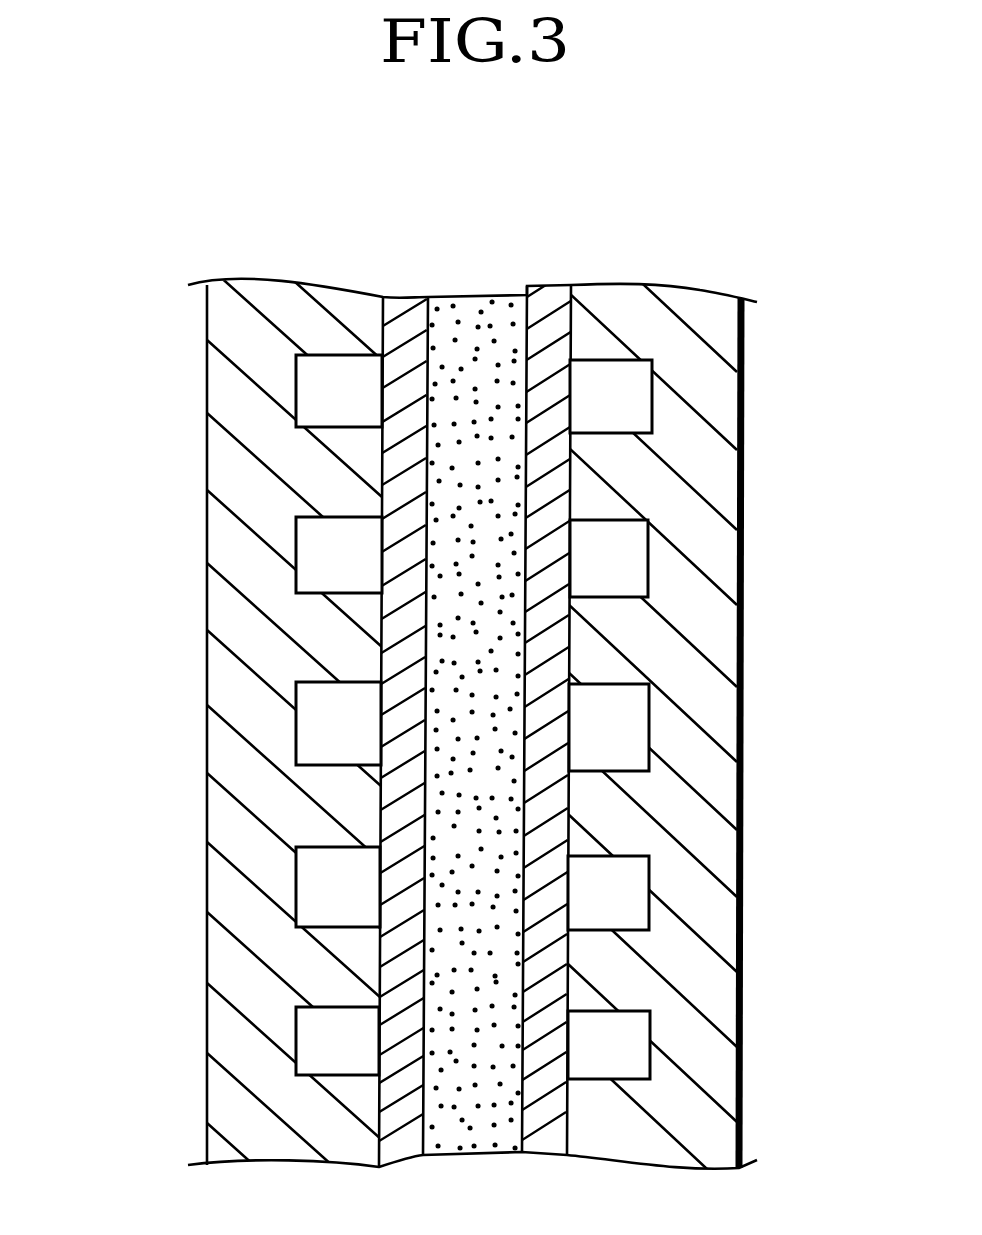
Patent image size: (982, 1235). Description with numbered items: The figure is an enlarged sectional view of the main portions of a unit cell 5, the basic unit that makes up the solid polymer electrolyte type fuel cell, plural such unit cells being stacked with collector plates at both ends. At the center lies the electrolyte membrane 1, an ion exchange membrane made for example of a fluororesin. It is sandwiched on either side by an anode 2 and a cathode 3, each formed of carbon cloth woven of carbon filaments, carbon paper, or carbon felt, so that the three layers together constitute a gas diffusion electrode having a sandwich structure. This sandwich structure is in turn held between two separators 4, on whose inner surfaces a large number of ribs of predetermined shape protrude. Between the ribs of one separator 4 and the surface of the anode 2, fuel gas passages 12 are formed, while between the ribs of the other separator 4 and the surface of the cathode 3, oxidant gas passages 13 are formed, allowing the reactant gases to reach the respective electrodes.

The electrolyte membrane 1 is at (483, 295).
The anode 2 is at (555, 293).
The cathode 3 is at (402, 298).
The separator 4 is at (278, 285).
The unit cell 5 is at (206, 323).
The fuel gas passage 12 is at (617, 558).
The oxidant gas passage 13 is at (310, 396).